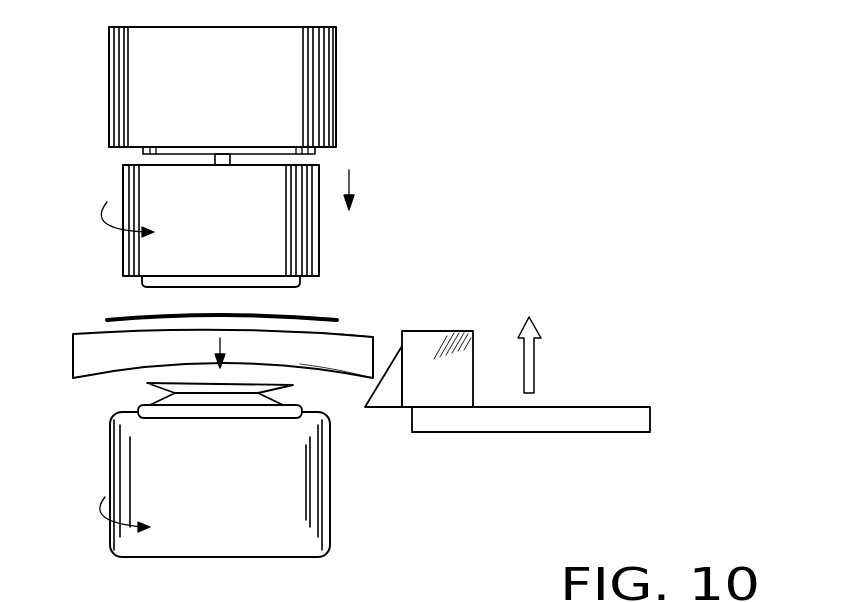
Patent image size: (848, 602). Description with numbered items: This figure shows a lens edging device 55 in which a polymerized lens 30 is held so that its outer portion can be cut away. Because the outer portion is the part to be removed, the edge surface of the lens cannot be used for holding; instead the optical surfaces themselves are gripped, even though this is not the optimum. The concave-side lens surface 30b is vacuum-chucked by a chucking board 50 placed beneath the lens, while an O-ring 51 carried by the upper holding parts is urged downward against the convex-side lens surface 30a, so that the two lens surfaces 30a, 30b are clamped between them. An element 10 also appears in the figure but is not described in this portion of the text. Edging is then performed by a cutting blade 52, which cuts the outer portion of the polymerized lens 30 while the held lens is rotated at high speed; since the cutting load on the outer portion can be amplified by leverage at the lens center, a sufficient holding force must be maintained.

The thin plate substrate 10 is at (323, 318).
The polymerized lens 30 is at (377, 335).
The convex-side lens surface 30a is at (355, 328).
The concave-side lens surface 30b is at (343, 368).
The chucking board 50 is at (197, 400).
The O-ring 51 is at (147, 291).
The cutting blade 52 is at (387, 397).
The edging device 55 is at (487, 98).